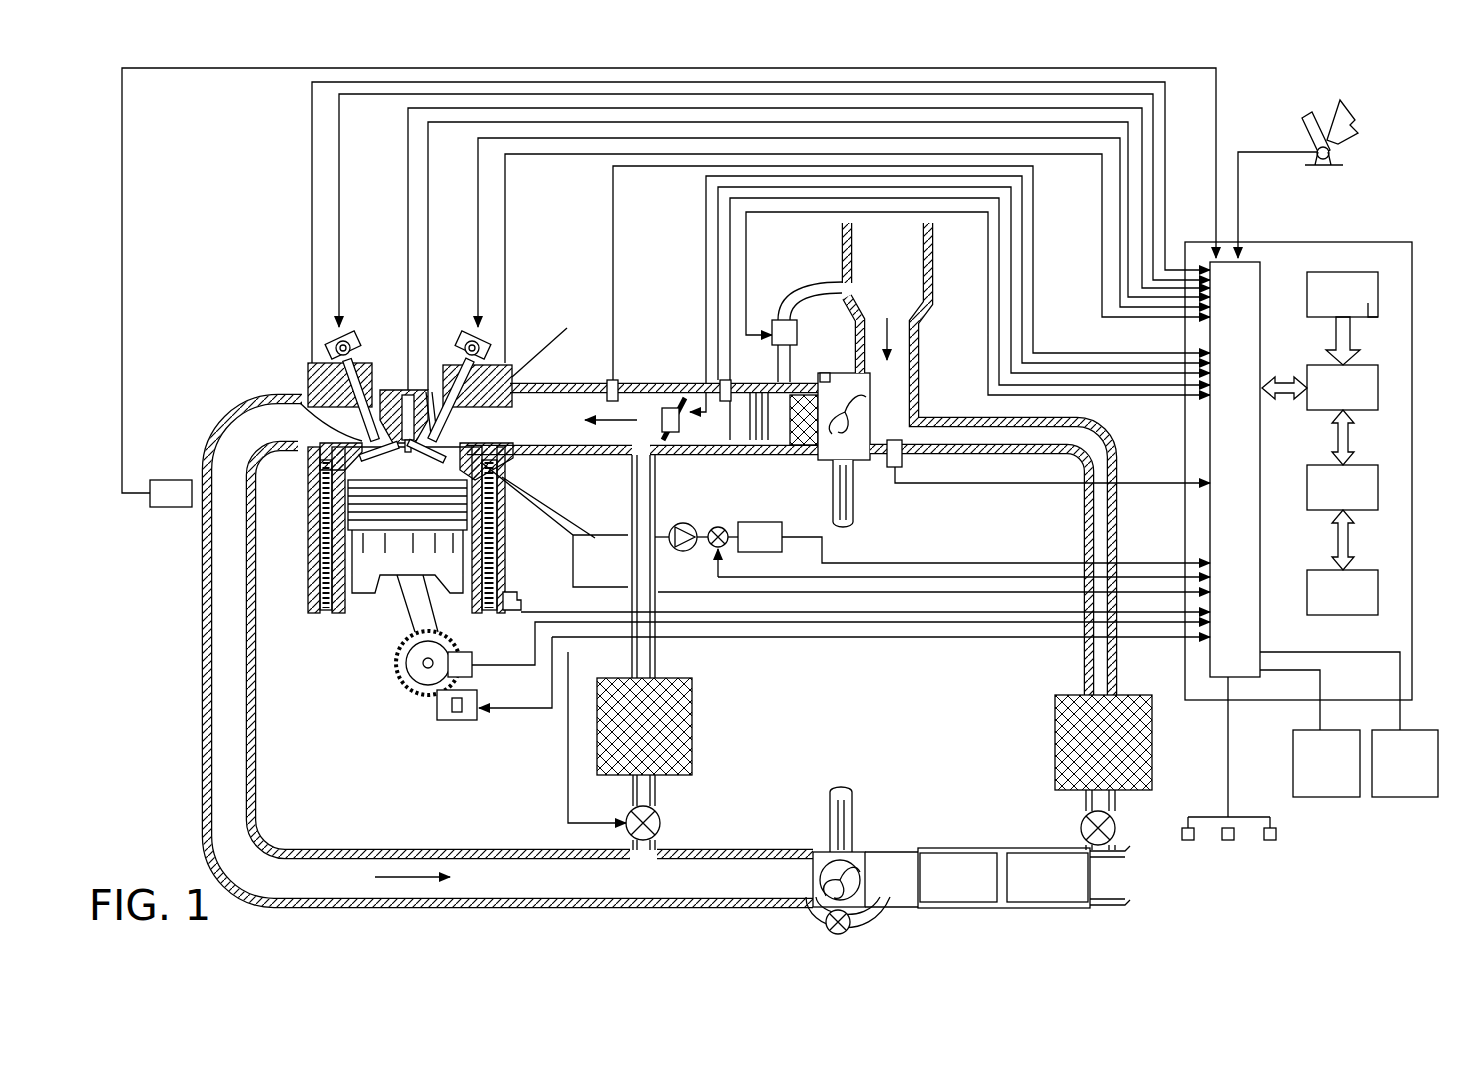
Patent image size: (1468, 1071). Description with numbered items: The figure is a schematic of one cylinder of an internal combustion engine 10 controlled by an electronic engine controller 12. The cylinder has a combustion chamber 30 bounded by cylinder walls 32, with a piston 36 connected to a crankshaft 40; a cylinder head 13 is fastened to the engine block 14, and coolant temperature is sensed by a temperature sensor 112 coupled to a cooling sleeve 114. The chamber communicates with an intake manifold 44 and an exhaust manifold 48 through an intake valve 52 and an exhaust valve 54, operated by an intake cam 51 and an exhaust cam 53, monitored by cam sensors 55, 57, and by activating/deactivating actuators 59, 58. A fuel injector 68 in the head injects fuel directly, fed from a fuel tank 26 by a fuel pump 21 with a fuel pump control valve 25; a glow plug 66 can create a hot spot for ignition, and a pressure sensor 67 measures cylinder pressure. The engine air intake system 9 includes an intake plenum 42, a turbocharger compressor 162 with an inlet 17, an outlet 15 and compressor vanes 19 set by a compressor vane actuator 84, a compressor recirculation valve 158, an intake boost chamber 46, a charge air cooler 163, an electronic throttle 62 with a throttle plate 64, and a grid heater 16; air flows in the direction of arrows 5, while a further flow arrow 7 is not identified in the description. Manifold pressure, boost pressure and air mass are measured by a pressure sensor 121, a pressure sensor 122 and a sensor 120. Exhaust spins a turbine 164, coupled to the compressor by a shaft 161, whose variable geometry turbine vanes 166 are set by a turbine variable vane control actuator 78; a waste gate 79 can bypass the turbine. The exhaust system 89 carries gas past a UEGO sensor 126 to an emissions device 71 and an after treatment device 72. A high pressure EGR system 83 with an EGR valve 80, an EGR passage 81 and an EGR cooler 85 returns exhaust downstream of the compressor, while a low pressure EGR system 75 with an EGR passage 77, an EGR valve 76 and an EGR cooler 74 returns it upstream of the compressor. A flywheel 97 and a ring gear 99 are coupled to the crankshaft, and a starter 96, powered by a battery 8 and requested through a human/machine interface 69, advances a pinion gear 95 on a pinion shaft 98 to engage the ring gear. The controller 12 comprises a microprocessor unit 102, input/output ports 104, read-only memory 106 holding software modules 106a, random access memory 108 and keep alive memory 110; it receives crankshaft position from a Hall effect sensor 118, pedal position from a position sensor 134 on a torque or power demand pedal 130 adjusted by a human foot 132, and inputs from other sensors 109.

The arrows 5 is at (890, 336).
The intake passage flow 7 is at (408, 878).
The battery 8 is at (1349, 724).
The engine air intake system 9 is at (692, 306).
The internal combustion engine 10 is at (250, 316).
The electronic engine controller 12 is at (1395, 242).
The cylinder head 13 is at (551, 339).
The engine block 14 is at (312, 478).
The compressor outlet 15 is at (798, 375).
The grid heater 16 is at (760, 442).
The compressor inlet 17 is at (870, 395).
The compressor vanes 19 is at (855, 417).
The fuel pump 21 is at (690, 527).
The fuel pump control valve 25 is at (712, 548).
The fuel tank 26 is at (969, 542).
The combustion chamber 30 is at (398, 465).
The cylinder walls 32 is at (340, 615).
The piston 36 is at (390, 570).
The crankshaft 40 is at (400, 690).
The intake plenum 42 is at (979, 459).
The intake manifold 44 is at (642, 419).
The intake boost chamber 46 is at (726, 419).
The exhaust manifold 48 is at (510, 651).
The intake cam 51 is at (468, 330).
The intake valve 52 is at (455, 437).
The exhaust cam 53 is at (352, 330).
The exhaust valve 54 is at (345, 420).
The intake cam sensor 55 is at (482, 352).
The exhaust cam sensor 57 is at (330, 348).
The variable valve activating/deactivating actuator 58 is at (355, 348).
The variable valve activating/deactivating actuator 59 is at (465, 345).
The electronic throttle 62 is at (668, 405).
The throttle plate 64 is at (700, 398).
The glow plug 66 is at (400, 400).
The pressure sensor 67 is at (432, 390).
The fuel injector 68 is at (510, 490).
The human/machine interface 69 is at (1310, 733).
The emissions device 71 is at (958, 877).
The exhaust gas after treatment device 72 is at (1047, 877).
The EGR cooler 74 is at (1062, 695).
The low pressure EGR system 75 is at (1040, 732).
The EGR valve 76 is at (1112, 820).
The EGR passage 77 is at (1100, 520).
The turbine variable vane control actuator 78 is at (868, 848).
The waste gate 79 is at (855, 928).
The EGR valve 80 is at (628, 810).
The EGR passage 81 is at (632, 482).
The high pressure EGR system 83 is at (555, 790).
The compressor vane actuator 84 is at (822, 372).
The EGR cooler 85 is at (692, 718).
The exhaust system 89 is at (210, 442).
The pinion gear 95 is at (458, 714).
The starter 96 is at (475, 718).
The flywheel 97 is at (398, 670).
The pinion shaft 98 is at (435, 708).
The ring gear 99 is at (410, 700).
The microprocessor unit 102 is at (1378, 380).
The input/output ports 104 is at (1262, 272).
The read-only memory 106 is at (1378, 280).
The software modules 106a is at (1372, 310).
The random access memory 108 is at (1378, 480).
The other sensors 109 is at (1230, 852).
The keep alive memory 110 is at (1378, 585).
The temperature sensor 112 is at (515, 592).
The cooling sleeve 114 is at (318, 523).
The Hall effect sensor 118 is at (478, 650).
The air mass sensor 120 is at (902, 455).
The pressure sensor 121 is at (610, 378).
The pressure sensor 122 is at (730, 380).
The universal exhaust gas oxygen sensor 126 is at (185, 508).
The torque or power demand pedal 130 is at (1305, 128).
The human foot 132 is at (1357, 114).
The position sensor 134 is at (1330, 160).
The compressor recirculation valve 158 is at (778, 320).
The shaft 161 is at (853, 522).
The turbocharger compressor 162 is at (825, 462).
The charge air cooler 163 is at (805, 448).
The turbine 164 is at (813, 850).
The variable geometry turbine vanes 166 is at (865, 880).